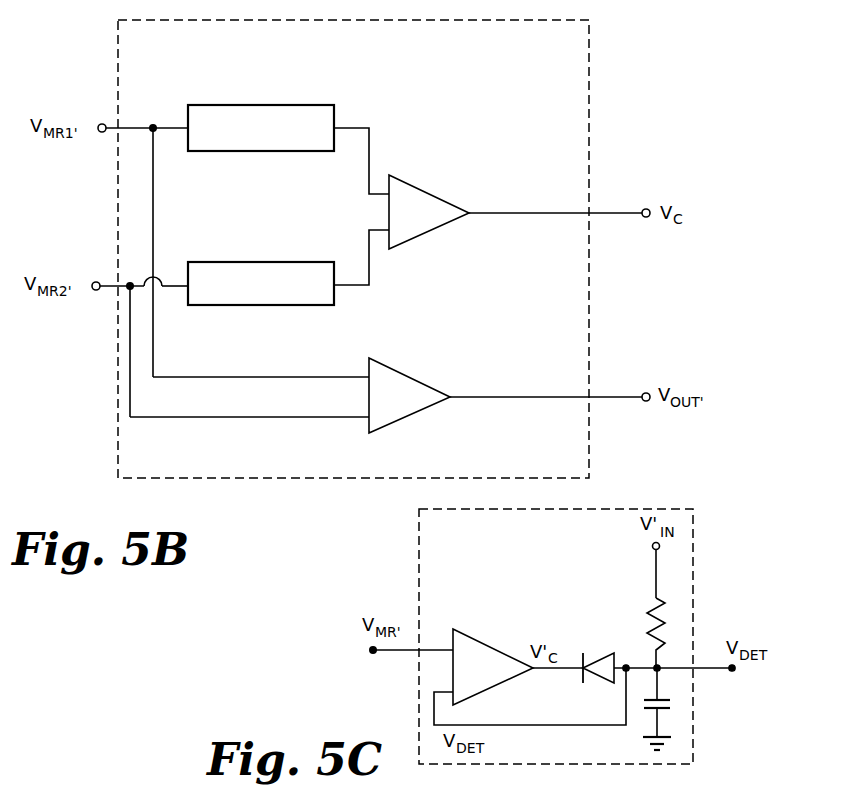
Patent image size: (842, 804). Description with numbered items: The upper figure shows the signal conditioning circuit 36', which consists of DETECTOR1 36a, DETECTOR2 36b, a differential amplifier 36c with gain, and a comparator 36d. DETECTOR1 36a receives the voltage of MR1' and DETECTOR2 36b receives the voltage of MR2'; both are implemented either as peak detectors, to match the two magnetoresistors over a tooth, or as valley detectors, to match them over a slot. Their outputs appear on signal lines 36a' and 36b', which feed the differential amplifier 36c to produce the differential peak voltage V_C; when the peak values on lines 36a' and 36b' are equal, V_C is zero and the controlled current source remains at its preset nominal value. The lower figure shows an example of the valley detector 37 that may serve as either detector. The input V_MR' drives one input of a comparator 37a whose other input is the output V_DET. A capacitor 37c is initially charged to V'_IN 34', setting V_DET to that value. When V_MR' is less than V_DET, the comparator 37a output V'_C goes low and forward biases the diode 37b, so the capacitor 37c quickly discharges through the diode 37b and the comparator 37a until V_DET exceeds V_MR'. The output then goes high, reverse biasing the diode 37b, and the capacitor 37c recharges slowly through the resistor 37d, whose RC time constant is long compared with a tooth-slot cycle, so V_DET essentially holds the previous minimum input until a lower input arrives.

In FIG. 5B, the signal conditioning circuit 36' is at (408, 249).
In FIG. 5B, the DETECTOR1 36a is at (261, 95).
In FIG. 5B, the signal line 36a' is at (384, 134).
In FIG. 5B, the DETECTOR2 36b is at (261, 310).
In FIG. 5B, the signal line 36b' is at (375, 286).
In FIG. 5B, the differential amplifier 36c is at (418, 238).
In FIG. 5B, the comparator 36d is at (405, 420).
In FIG. 5C, the valley detector 37 is at (693, 587).
In FIG. 5C, the comparator 37a is at (495, 645).
In FIG. 5C, the diode 37b is at (603, 681).
In FIG. 5C, the capacitor 37c is at (670, 700).
In FIG. 5C, the resistor 37d is at (650, 598).
In FIG. 5C, the V'_IN 34' is at (595, 568).